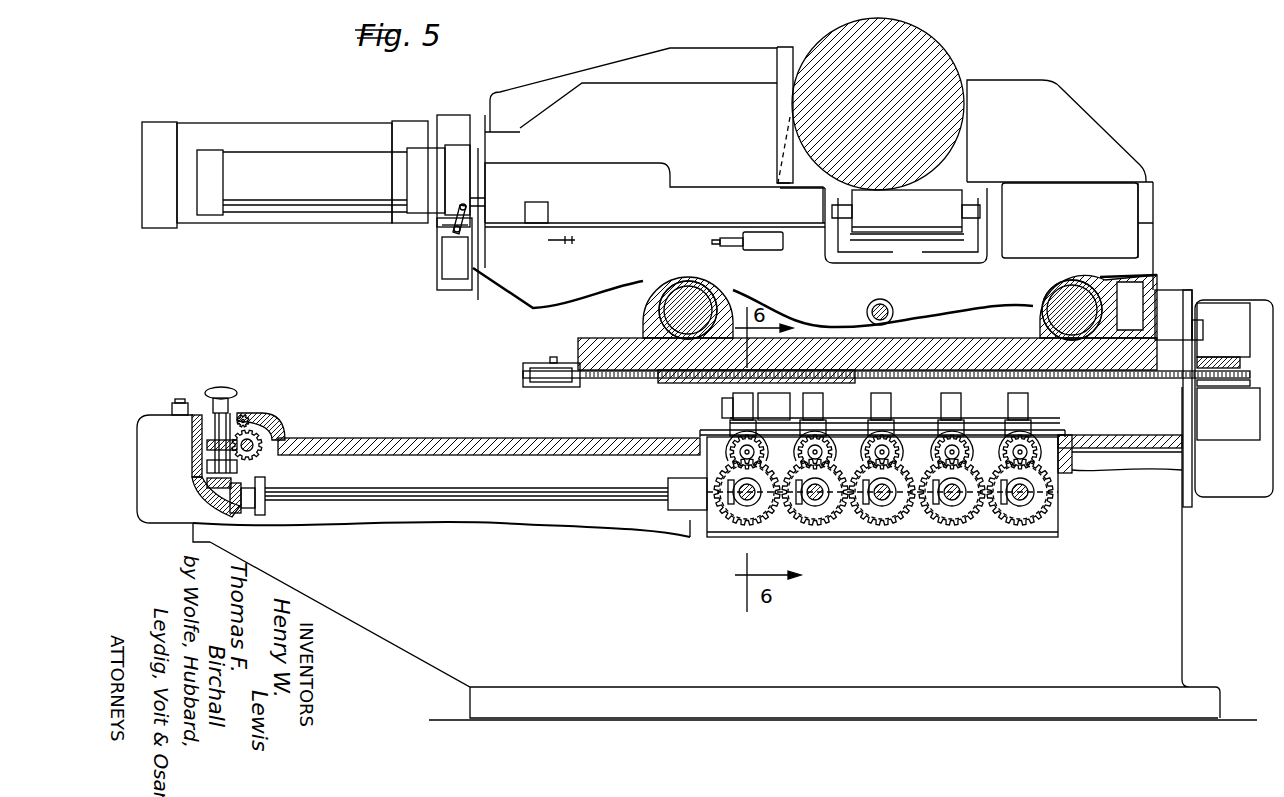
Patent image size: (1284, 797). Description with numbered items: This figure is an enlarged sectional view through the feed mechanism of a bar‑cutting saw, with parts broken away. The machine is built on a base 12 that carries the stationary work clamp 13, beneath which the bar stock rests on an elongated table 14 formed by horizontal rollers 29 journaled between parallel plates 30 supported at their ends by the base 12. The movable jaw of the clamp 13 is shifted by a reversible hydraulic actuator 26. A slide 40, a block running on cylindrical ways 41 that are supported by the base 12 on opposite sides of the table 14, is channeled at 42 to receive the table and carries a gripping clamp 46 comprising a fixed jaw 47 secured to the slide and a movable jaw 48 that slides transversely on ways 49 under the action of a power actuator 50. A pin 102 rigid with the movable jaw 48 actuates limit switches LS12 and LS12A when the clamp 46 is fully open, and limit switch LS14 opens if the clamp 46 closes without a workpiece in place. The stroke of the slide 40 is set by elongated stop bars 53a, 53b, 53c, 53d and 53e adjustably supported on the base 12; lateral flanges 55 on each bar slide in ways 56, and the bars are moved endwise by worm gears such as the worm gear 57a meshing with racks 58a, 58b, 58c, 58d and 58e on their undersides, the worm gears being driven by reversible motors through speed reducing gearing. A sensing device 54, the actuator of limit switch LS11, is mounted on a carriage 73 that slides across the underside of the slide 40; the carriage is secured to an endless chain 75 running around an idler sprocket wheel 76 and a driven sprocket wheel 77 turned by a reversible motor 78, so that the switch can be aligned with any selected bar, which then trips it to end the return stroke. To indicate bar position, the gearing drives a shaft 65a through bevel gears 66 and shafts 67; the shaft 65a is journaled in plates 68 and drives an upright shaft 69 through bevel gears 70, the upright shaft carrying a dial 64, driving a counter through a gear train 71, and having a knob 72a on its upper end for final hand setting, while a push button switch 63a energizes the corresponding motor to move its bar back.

The base 12 is at (1183, 557).
The stationary clamp 13 is at (616, 63).
The table 14 is at (968, 178).
The reversible hydraulic actuator 26 is at (326, 128).
The horizontal rollers 29 is at (937, 200).
The parallel plates 30 is at (838, 232).
The slide 40 is at (1155, 250).
The cylindrical ways 41 is at (655, 308).
The channel 42 is at (985, 245).
The slide clamp 46 is at (750, 96).
The fixed jaw 47 is at (975, 85).
The movable jaw 48 is at (780, 88).
The ways 49 is at (724, 195).
The power actuator 50 is at (299, 206).
The stop bar 53a is at (736, 392).
The stop bar 53b is at (815, 395).
The stop bar 53c is at (883, 395).
The stop bar 53d is at (952, 392).
The stop bar 53e is at (1020, 392).
The sensing device 54 is at (722, 408).
The lateral flanges 55 is at (1030, 426).
The ways 56 is at (998, 417).
The worm gear 57a is at (707, 480).
The rack 58a is at (740, 440).
The rack 58b is at (802, 450).
The rack 58c is at (869, 450).
The rack 58d is at (937, 450).
The rack 58e is at (1006, 450).
The push button switch 63a is at (180, 399).
The dial 64 is at (248, 416).
The shaft 65a is at (470, 499).
The bevel gears 66 is at (738, 515).
The shafts 67 is at (750, 500).
The plates 68 is at (688, 530).
The upright shaft 69 is at (215, 432).
The bevel gears 70 is at (222, 494).
The gear train 71 is at (268, 460).
The knob 72a is at (225, 388).
The carriage 73 is at (672, 382).
The endless chain 75 is at (1115, 378).
The idler sprocket wheel 76 is at (547, 368).
The driven sprocket wheel 77 is at (1208, 365).
The reversible motor 78 is at (1230, 325).
The pin 102 is at (478, 215).
The limit switch LS11 is at (774, 406).
The limit switch LS12 is at (450, 255).
The limit switch LS12A is at (450, 262).
The limit switch LS14 is at (773, 250).